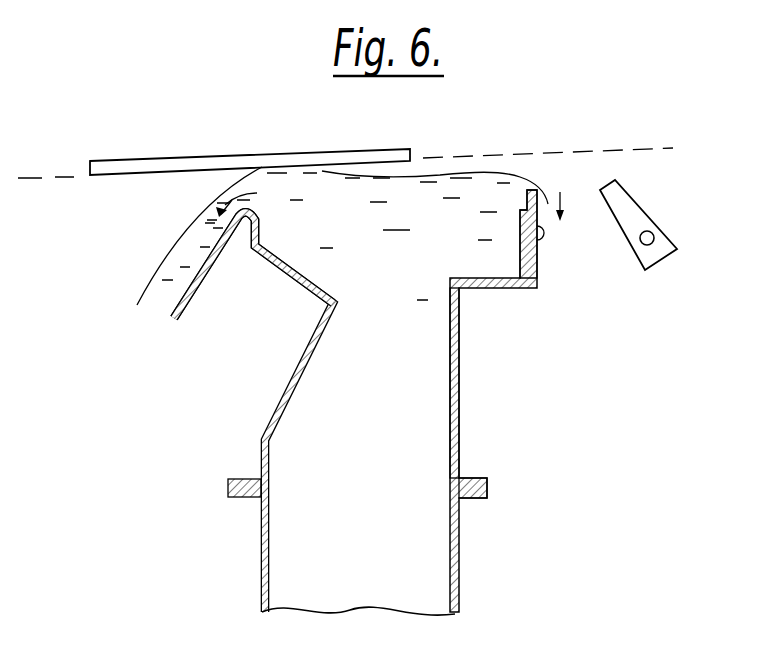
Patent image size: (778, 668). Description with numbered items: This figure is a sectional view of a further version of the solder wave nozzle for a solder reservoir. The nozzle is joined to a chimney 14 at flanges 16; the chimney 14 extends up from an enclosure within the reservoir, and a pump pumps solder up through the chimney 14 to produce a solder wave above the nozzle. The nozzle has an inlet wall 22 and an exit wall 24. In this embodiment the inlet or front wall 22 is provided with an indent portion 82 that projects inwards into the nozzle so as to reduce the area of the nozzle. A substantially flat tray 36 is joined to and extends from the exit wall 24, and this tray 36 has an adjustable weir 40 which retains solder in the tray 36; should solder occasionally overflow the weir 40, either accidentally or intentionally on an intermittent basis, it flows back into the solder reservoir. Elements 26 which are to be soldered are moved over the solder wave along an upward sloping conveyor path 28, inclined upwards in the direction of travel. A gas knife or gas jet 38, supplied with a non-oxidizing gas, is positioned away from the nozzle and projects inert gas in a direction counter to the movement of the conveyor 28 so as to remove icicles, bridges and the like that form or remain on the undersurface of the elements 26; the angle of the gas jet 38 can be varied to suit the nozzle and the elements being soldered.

The chimney 14 is at (521, 401).
The flanges 16 is at (473, 478).
The inlet wall 22 is at (283, 412).
The exit wall 24 is at (459, 380).
The elements 26 is at (204, 157).
The conveyor path 28 is at (32, 177).
The tray 36 is at (483, 290).
The gas knife jet 38 is at (638, 217).
The adjustable weir 40 is at (537, 258).
The indent portion 82 is at (327, 291).